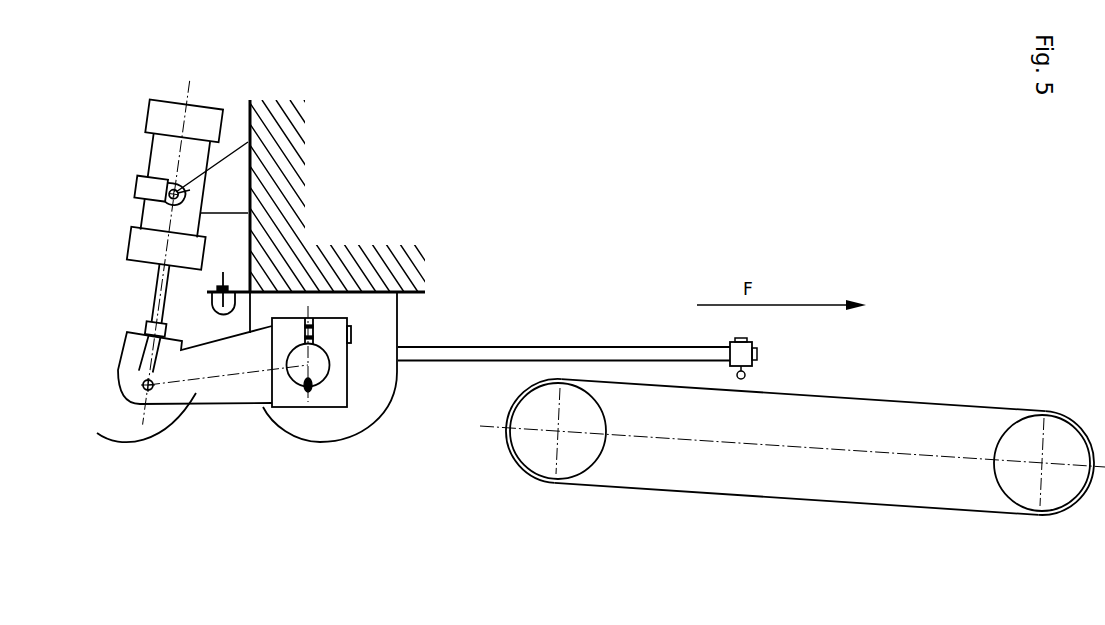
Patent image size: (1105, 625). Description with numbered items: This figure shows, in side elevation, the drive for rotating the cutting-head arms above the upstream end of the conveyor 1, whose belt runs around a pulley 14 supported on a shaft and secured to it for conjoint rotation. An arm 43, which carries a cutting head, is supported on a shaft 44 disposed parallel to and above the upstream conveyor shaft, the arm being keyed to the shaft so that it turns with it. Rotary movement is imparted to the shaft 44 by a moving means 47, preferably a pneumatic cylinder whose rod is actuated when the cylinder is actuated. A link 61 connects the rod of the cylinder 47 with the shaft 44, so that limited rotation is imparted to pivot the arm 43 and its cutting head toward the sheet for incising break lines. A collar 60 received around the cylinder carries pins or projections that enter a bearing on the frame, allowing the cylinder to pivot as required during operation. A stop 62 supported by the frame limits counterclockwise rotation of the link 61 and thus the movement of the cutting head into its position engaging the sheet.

The conveyor 1 is at (912, 476).
The pulley 14 is at (1026, 486).
The arm 43 is at (542, 347).
The shaft 44 is at (306, 387).
The moving means 47 is at (165, 157).
The collar 60 is at (143, 187).
The link 61 is at (192, 412).
The stop 62 is at (210, 298).